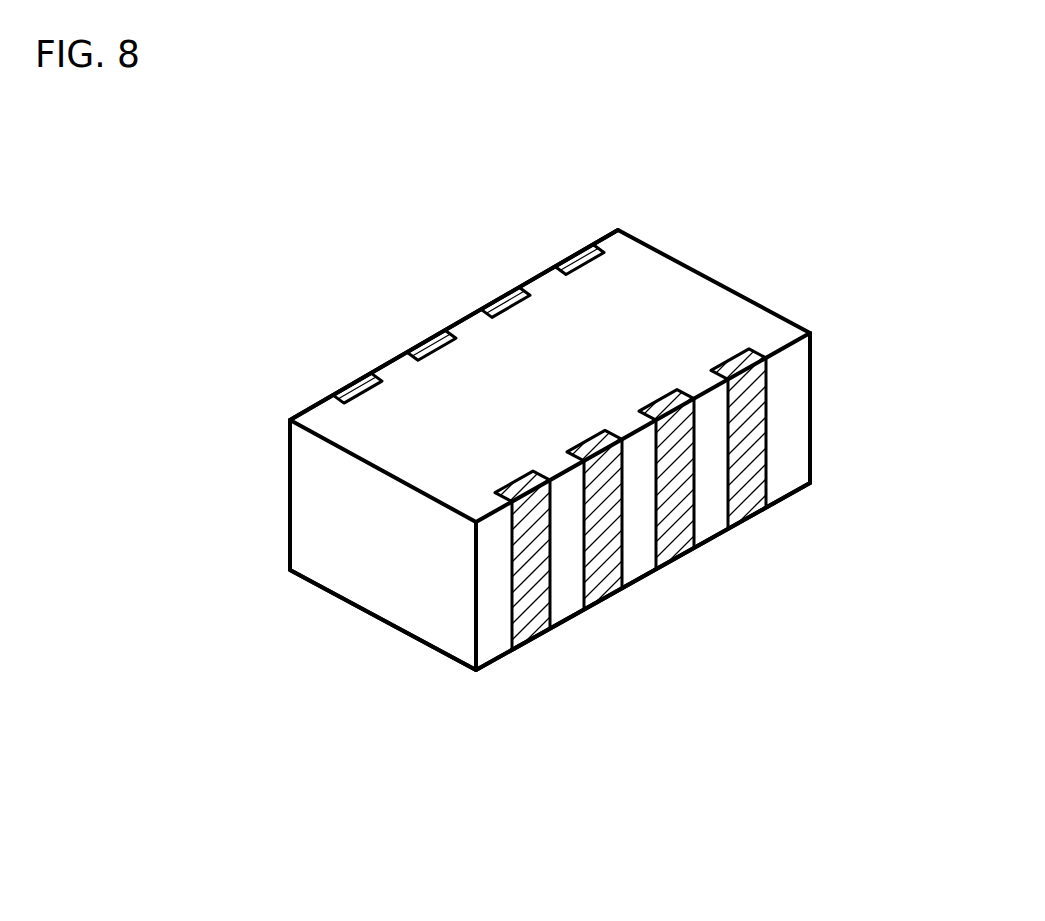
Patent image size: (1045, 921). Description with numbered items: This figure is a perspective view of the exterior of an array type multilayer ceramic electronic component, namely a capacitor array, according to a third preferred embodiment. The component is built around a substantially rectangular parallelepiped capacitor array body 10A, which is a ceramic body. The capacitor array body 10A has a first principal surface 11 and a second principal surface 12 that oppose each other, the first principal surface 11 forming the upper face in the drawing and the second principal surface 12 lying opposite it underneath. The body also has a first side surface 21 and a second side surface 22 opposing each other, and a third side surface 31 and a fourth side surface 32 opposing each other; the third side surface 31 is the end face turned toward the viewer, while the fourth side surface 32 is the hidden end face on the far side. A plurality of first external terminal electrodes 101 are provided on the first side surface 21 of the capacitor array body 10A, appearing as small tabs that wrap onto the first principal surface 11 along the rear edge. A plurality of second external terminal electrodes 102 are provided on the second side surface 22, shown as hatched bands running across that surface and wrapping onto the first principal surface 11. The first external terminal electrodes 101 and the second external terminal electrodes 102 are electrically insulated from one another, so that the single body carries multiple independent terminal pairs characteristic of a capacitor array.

The capacitor array body 10A is at (613, 448).
The first principal surface 11 is at (682, 305).
The second principal surface 12 is at (415, 643).
The first side surface 21 is at (404, 384).
The second side surface 22 is at (570, 593).
The third side surface 31 is at (360, 582).
The fourth side surface 32 is at (705, 337).
The first external terminal electrodes 101 is at (502, 302).
The second external terminal electrodes 102 is at (756, 507).